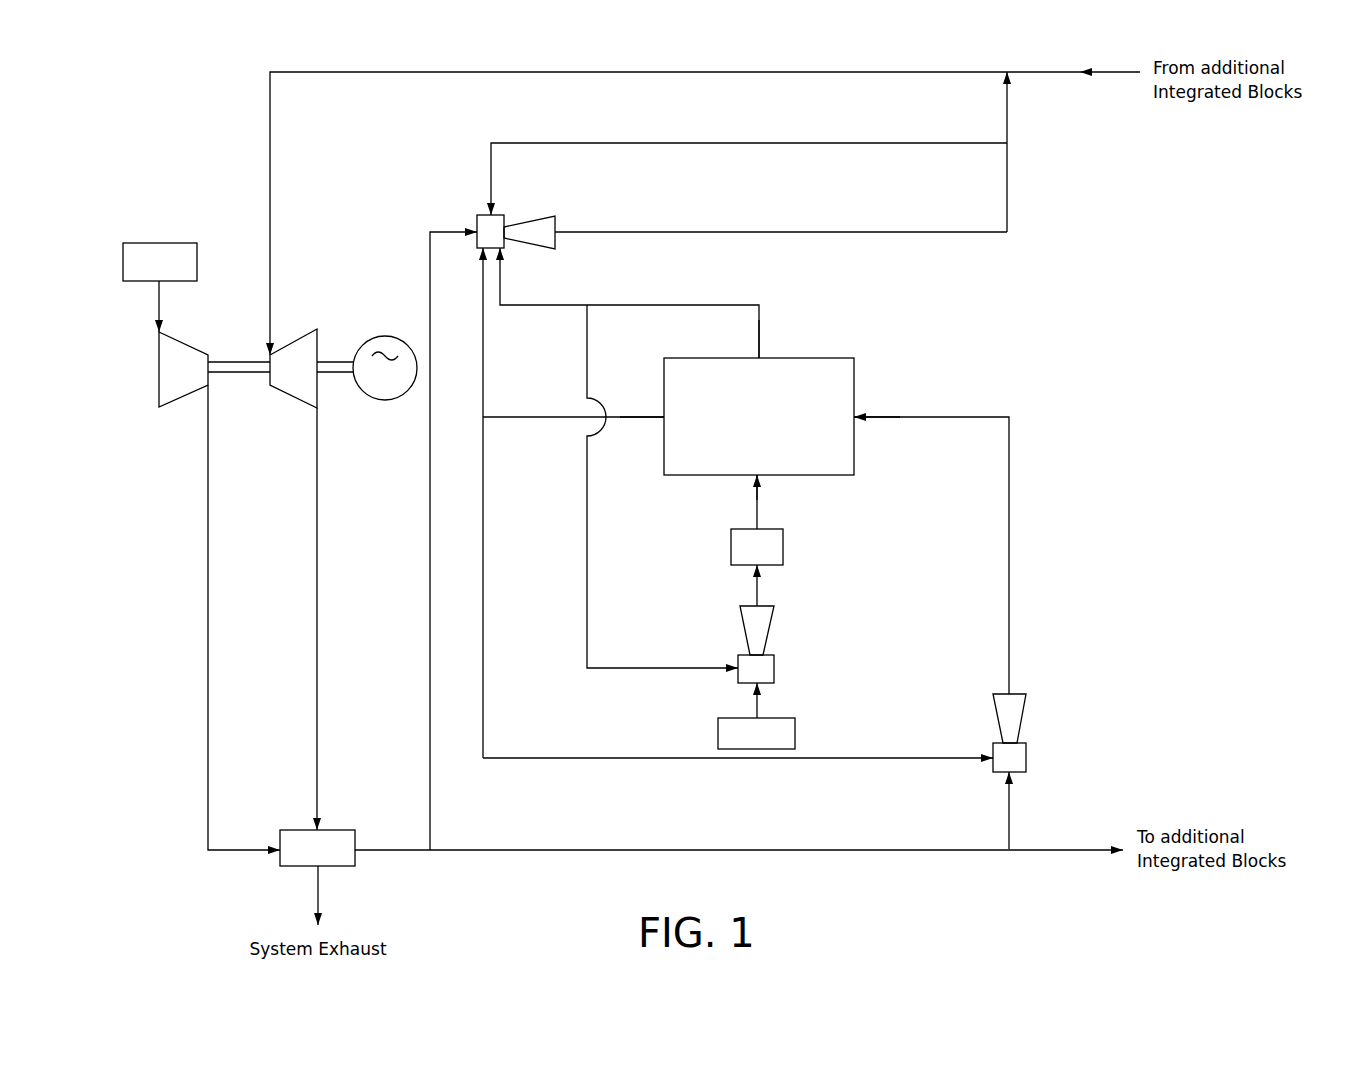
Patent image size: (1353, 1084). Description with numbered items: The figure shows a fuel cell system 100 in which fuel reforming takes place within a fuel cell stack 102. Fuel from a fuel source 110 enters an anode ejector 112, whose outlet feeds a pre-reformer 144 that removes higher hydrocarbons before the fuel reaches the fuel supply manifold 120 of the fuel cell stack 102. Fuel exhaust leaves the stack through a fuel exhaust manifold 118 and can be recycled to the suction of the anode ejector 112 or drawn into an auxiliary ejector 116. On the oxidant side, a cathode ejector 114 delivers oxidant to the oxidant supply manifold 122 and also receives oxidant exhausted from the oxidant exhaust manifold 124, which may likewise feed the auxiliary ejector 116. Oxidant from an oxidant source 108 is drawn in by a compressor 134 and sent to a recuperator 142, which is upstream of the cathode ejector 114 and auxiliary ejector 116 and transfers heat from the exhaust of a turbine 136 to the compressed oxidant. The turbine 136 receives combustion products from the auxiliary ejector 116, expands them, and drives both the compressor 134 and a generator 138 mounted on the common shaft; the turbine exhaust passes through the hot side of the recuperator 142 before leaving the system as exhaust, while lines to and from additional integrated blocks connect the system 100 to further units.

The fuel cell system 100 is at (158, 95).
The fuel cell stack 102 is at (743, 427).
The oxidant source 108 is at (146, 271).
The fuel source 110 is at (743, 743).
The anode ejector 112 is at (813, 676).
The cathode ejector 114 is at (1065, 771).
The auxiliary ejector 116 is at (431, 213).
The fuel exhaust manifold 118 is at (762, 356).
The fuel supply manifold 120 is at (770, 477).
The oxidant supply manifold 122 is at (857, 412).
The oxidant exhaust manifold 124 is at (661, 413).
The compressor 134 is at (169, 376).
The turbine 136 is at (279, 376).
The generator 138 is at (371, 383).
The recuperator 142 is at (304, 857).
The pre-reformer 144 is at (743, 556).